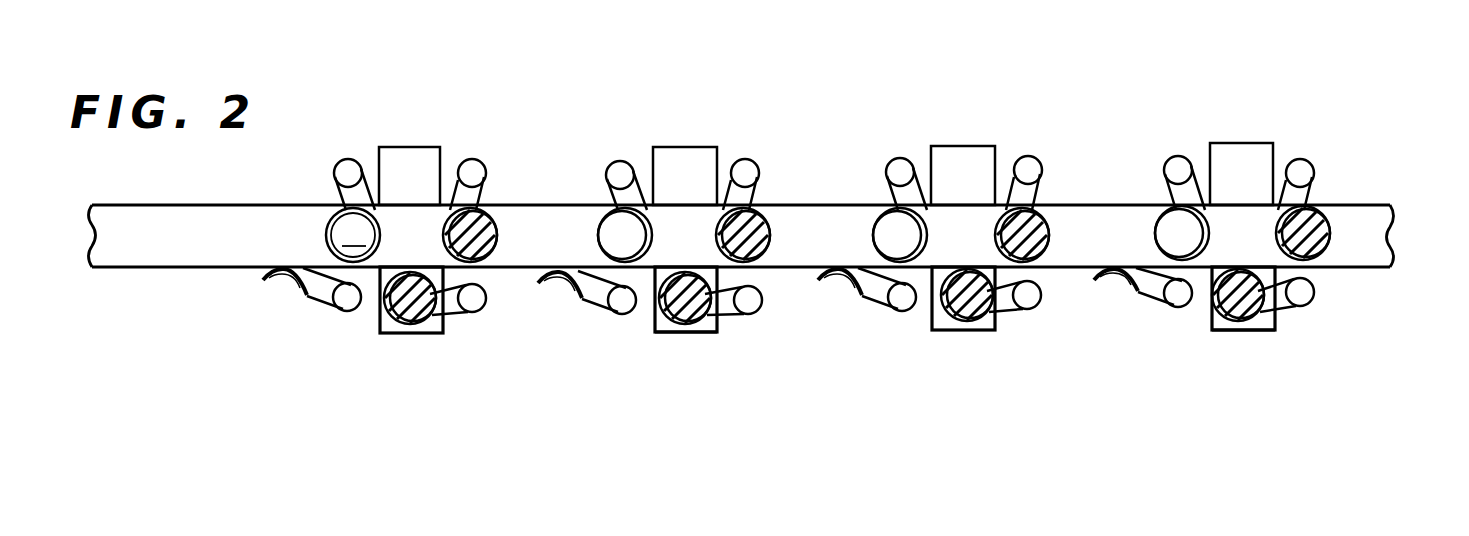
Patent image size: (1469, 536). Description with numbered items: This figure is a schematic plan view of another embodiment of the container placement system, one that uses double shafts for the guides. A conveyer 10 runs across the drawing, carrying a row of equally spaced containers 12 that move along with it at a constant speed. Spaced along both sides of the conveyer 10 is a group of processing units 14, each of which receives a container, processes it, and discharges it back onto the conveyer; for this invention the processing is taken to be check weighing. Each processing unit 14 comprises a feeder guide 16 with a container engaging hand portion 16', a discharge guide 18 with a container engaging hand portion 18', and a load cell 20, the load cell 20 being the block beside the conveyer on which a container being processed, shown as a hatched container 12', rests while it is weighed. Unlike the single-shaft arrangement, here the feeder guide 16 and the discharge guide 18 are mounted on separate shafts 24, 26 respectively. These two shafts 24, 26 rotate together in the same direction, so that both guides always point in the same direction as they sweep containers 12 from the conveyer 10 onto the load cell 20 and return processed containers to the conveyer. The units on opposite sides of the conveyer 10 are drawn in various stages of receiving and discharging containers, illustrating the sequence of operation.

The conveyer 10 is at (168, 247).
The containers 12 is at (767, 207).
The containers being processed 12' is at (824, 309).
The processing unit 14 is at (424, 141).
The feeder guide 16 is at (705, 319).
The container engaging hand portion of feeder guide 16' is at (678, 308).
The discharge guide 18 is at (897, 340).
The container engaging hand portion of discharge guide 18' is at (966, 364).
The load cell 20 is at (424, 156).
The shaft for feeder guide 24 is at (350, 170).
The shaft for discharge guide 26 is at (474, 170).